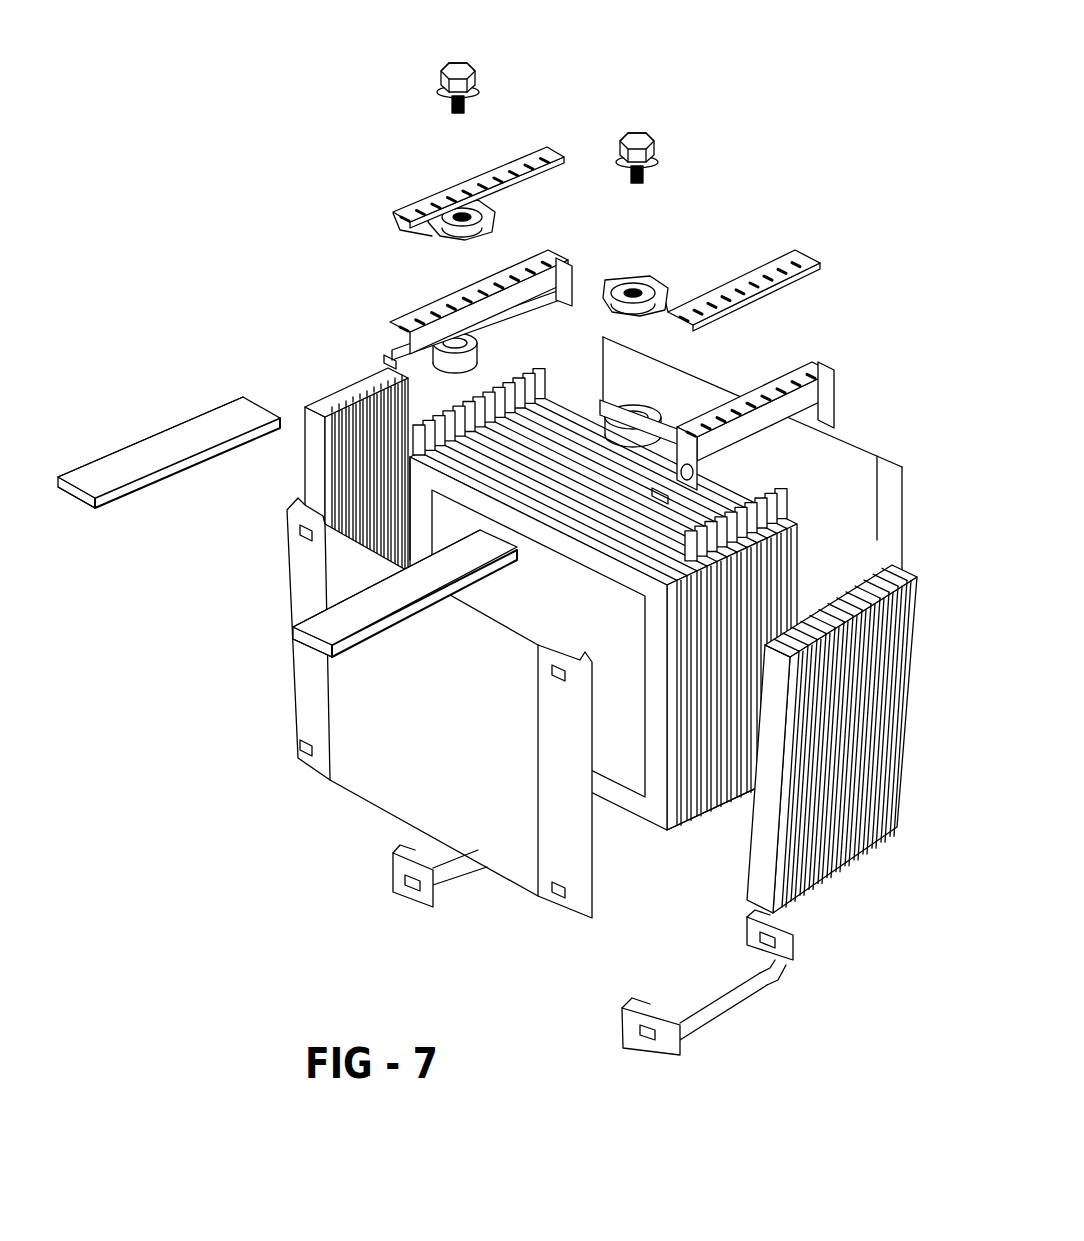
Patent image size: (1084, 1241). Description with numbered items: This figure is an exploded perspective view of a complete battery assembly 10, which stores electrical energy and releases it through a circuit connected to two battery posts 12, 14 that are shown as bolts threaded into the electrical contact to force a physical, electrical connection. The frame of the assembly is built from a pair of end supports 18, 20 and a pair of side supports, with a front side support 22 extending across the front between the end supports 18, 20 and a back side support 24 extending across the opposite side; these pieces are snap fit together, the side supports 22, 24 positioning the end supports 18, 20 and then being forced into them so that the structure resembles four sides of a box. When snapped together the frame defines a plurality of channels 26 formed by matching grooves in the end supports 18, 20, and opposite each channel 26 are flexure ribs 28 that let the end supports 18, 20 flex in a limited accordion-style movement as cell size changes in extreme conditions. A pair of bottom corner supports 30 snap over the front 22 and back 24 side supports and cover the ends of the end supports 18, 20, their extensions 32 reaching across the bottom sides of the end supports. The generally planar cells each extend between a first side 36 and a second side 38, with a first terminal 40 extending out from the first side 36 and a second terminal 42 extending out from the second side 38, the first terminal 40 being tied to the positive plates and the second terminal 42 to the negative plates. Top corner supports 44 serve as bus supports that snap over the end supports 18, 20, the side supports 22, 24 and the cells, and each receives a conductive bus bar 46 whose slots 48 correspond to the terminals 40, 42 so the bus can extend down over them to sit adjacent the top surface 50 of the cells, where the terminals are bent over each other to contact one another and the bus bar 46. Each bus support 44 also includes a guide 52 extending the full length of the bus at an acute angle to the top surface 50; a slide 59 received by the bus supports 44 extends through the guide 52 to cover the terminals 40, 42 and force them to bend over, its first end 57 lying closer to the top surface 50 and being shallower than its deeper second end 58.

The battery assembly 10 is at (230, 212).
The battery post 12 is at (657, 135).
The battery post 14 is at (470, 72).
The end support 18 is at (822, 900).
The end support 20 is at (298, 478).
The front side support 22 is at (352, 787).
The back side support 24 is at (852, 445).
The channels 26 is at (328, 390).
The flexure ribs 28 is at (310, 400).
The bottom corner supports 30 is at (415, 905).
The extensions 32 is at (440, 855).
The first side 36 is at (733, 822).
The second side 38 is at (400, 520).
The first terminal 40 is at (757, 492).
The second terminal 42 is at (478, 372).
The top corner supports 44 is at (418, 300).
The bus bar 46 is at (395, 215).
The slots 48 is at (480, 167).
The top surface 50 is at (563, 405).
The guide 52 is at (398, 318).
The first end 57 is at (265, 395).
The second end 58 is at (80, 505).
The slide 59 is at (160, 435).